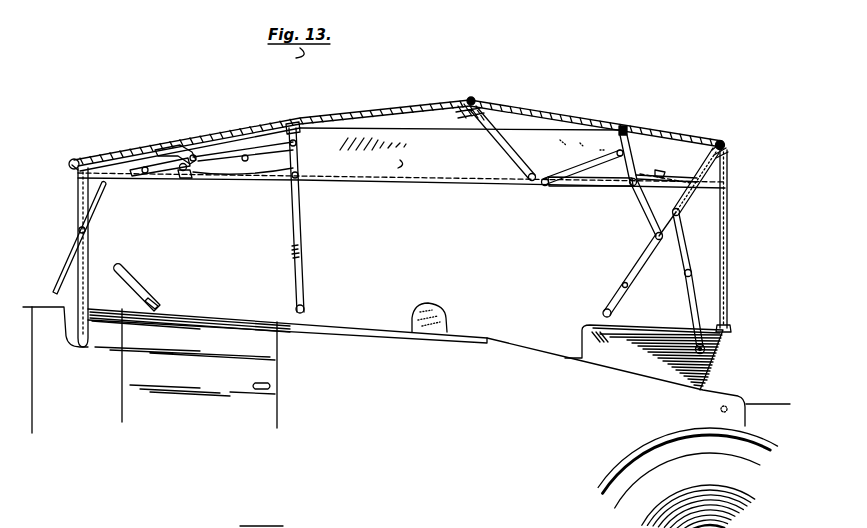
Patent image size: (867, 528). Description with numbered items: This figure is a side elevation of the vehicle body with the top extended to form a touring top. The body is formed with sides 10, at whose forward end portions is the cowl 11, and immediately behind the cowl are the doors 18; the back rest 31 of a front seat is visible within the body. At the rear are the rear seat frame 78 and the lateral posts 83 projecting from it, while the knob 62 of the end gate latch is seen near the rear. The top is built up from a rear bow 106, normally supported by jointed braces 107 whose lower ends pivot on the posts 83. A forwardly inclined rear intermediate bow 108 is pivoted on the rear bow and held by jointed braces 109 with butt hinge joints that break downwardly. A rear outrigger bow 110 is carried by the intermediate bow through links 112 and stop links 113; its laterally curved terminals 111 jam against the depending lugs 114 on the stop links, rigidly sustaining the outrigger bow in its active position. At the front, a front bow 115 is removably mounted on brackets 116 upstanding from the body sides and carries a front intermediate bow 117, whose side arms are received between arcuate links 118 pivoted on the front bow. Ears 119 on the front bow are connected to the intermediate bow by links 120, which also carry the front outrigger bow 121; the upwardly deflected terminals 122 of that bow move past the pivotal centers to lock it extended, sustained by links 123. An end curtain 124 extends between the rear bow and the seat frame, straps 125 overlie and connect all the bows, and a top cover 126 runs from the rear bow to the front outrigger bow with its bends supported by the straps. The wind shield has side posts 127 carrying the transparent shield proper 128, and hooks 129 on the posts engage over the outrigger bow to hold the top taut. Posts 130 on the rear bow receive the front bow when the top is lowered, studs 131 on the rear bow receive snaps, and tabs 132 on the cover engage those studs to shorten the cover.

The sides 10 is at (406, 417).
The cowl 11 is at (93, 368).
The doors 18 is at (199, 368).
The back rest 31 is at (446, 304).
The knob 62 is at (641, 325).
The rear seat frame 78 is at (716, 350).
The lateral posts 83 is at (661, 360).
The rear bow 106 is at (646, 258).
The jointed braces 107 is at (690, 248).
The rear intermediate bow 108 is at (624, 128).
The jointed braces 109 is at (661, 171).
The rear outrigger bow 110 is at (494, 130).
The laterally curved terminals 111 is at (535, 186).
The links 112 is at (590, 189).
The stop links 113 is at (566, 170).
The lugs 114 is at (556, 192).
The front bow 115 is at (300, 236).
The brackets 116 is at (306, 309).
The front intermediate bow 117 is at (170, 147).
The arcuate links 118 is at (268, 178).
The ears 119 is at (292, 124).
The links 120 is at (250, 146).
The front outrigger bow 121 is at (98, 163).
The terminals 122 is at (192, 180).
The links 123 is at (165, 160).
The end curtain 124 is at (731, 169).
The straps 125 is at (426, 126).
The top cover 126 is at (530, 108).
The side posts 127 is at (90, 273).
The transparent shield proper 128 is at (60, 277).
The hooks 129 is at (87, 158).
The posts 130 is at (622, 285).
The studs 131 is at (732, 148).
The tabs 132 is at (475, 98).